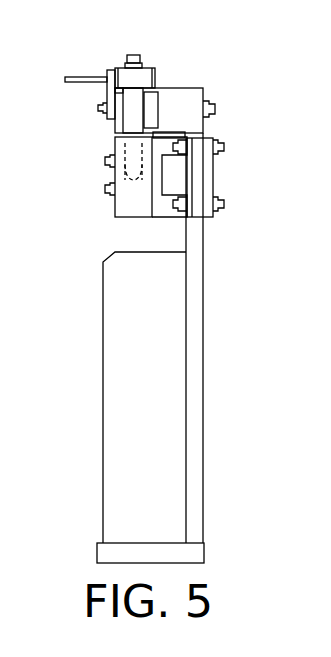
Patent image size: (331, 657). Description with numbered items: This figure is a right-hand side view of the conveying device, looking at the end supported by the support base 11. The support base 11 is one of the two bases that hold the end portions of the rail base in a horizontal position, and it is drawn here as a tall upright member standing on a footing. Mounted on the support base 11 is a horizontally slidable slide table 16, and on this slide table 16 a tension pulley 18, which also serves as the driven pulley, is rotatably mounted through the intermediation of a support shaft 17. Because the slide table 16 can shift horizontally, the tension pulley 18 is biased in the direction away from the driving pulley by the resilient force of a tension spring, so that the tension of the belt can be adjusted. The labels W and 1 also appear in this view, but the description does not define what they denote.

The workpiece W is at (82, 76).
The mounting plate 1 is at (105, 90).
The support base 11 is at (197, 362).
The slide table 16 is at (148, 200).
The support shaft 17 is at (128, 118).
The tension pulley 18 is at (145, 70).